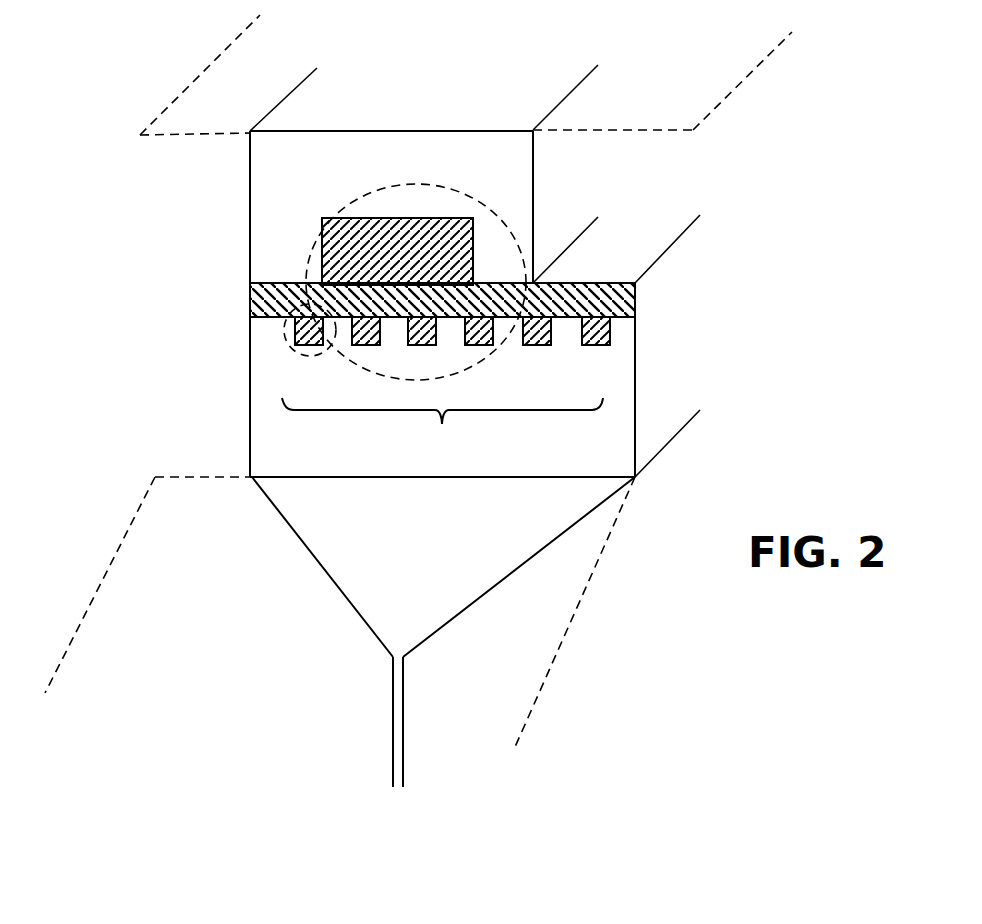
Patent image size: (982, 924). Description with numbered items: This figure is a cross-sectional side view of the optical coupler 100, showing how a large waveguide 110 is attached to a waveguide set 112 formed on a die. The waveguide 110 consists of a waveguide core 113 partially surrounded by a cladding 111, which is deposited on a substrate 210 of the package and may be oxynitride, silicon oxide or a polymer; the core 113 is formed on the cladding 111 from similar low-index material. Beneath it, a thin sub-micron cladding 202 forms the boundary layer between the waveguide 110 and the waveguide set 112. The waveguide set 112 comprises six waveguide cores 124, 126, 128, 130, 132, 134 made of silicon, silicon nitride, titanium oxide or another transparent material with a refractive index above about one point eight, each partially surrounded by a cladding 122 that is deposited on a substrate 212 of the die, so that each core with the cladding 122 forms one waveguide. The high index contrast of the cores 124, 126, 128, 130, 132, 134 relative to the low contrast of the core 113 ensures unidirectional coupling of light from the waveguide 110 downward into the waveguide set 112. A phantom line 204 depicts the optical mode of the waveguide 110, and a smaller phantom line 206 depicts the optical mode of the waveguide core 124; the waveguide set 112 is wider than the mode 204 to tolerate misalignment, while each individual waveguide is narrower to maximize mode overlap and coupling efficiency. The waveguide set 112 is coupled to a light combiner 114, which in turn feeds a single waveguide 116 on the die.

The optical coupler 100 is at (742, 677).
The waveguide 110 is at (196, 225).
The cladding 111 is at (572, 160).
The waveguide set 112 is at (442, 426).
The waveguide core 113 is at (413, 218).
The light combiner 114 is at (430, 543).
The waveguide 116 is at (392, 733).
The cladding 122 is at (665, 430).
The waveguide core 124 is at (293, 335).
The waveguide core 126 is at (366, 348).
The waveguide core 128 is at (428, 348).
The waveguide core 130 is at (486, 348).
The waveguide core 132 is at (532, 348).
The waveguide core 134 is at (612, 340).
The cladding 202 is at (590, 285).
The phantom line 204 is at (331, 200).
The phantom line 206 is at (302, 345).
The substrate 210 is at (242, 118).
The substrate 212 is at (184, 620).